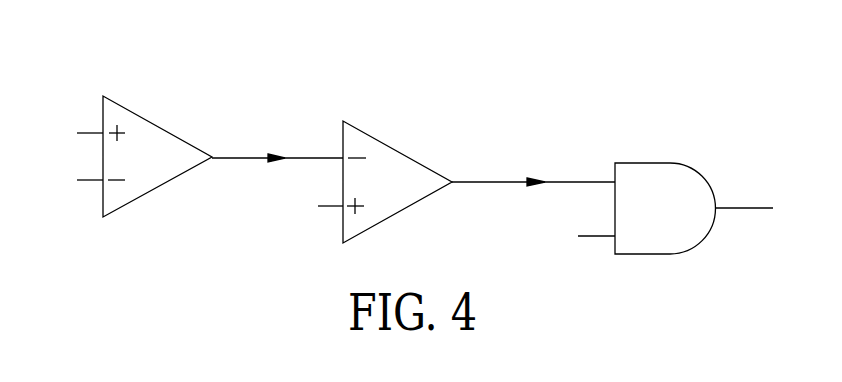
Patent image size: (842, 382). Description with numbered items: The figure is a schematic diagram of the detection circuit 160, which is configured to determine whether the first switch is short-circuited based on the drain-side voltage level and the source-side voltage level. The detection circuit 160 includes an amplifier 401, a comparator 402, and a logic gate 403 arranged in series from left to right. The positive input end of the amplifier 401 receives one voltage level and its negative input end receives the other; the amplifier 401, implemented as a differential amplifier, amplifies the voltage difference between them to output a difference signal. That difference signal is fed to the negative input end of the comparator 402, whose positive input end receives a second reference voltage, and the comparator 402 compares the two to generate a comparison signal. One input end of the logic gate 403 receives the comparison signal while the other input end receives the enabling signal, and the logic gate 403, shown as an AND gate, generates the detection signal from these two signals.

The detection circuit 160 is at (350, 62).
The amplifier 401 is at (167, 168).
The comparator 402 is at (372, 190).
The logic gate 403 is at (682, 218).